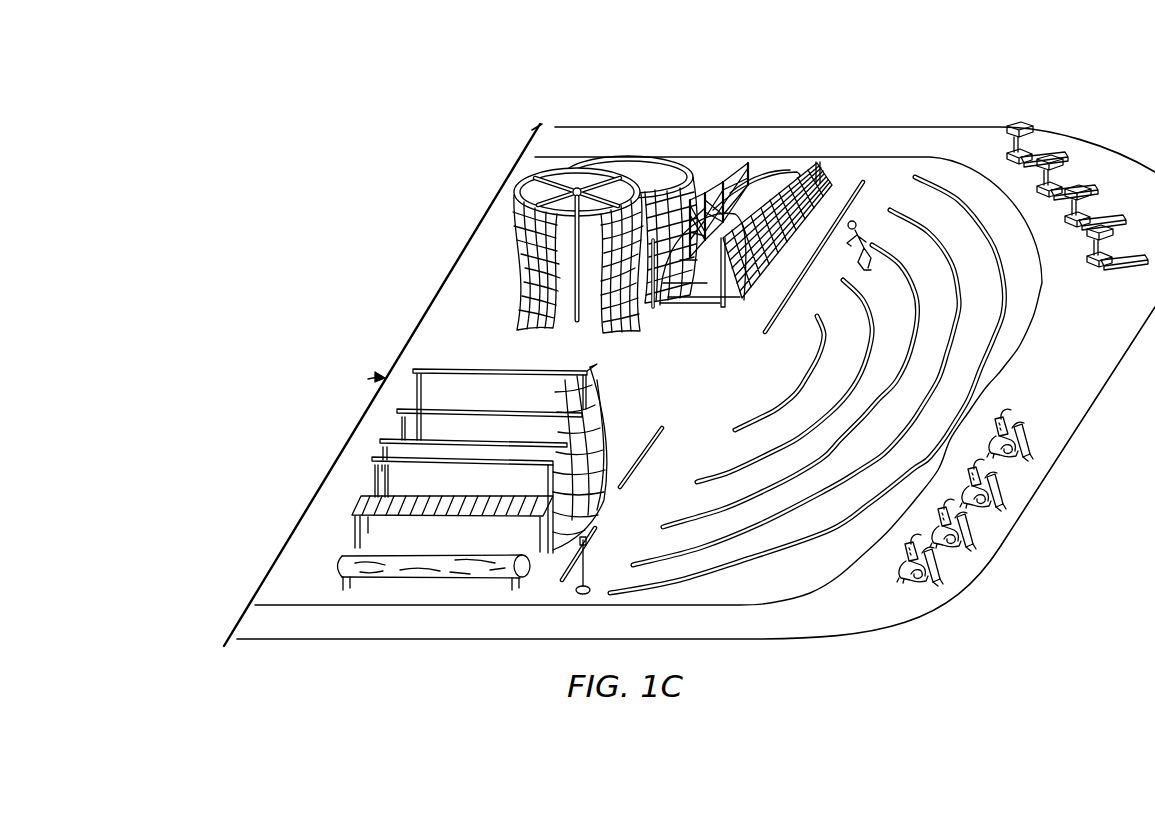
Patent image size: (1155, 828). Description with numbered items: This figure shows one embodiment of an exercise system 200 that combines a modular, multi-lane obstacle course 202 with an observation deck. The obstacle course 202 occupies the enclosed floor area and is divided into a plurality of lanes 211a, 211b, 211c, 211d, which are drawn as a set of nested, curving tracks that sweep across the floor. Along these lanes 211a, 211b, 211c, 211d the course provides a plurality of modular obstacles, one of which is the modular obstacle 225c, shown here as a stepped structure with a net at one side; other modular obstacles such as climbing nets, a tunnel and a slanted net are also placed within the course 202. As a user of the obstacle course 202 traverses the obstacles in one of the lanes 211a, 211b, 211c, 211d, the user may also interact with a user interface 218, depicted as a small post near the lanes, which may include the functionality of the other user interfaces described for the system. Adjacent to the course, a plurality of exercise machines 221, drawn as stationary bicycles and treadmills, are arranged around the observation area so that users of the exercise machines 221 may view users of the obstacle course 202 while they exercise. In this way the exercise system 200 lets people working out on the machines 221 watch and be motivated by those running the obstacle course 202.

The exercise system 200 is at (556, 50).
The obstacle course 202 is at (878, 128).
The lane 211a is at (793, 398).
The lane 211b is at (730, 487).
The lane 211c is at (947, 313).
The lane 211d is at (983, 352).
The user interface 218 is at (590, 572).
The exercise machine 221 is at (938, 562).
The modular obstacle 225c is at (485, 346).